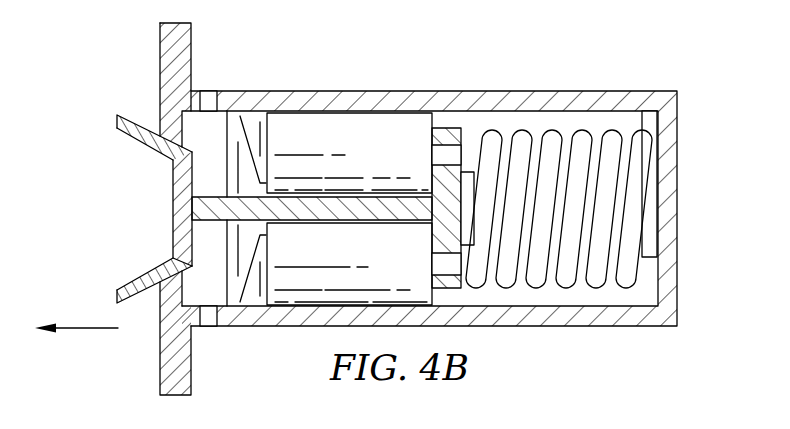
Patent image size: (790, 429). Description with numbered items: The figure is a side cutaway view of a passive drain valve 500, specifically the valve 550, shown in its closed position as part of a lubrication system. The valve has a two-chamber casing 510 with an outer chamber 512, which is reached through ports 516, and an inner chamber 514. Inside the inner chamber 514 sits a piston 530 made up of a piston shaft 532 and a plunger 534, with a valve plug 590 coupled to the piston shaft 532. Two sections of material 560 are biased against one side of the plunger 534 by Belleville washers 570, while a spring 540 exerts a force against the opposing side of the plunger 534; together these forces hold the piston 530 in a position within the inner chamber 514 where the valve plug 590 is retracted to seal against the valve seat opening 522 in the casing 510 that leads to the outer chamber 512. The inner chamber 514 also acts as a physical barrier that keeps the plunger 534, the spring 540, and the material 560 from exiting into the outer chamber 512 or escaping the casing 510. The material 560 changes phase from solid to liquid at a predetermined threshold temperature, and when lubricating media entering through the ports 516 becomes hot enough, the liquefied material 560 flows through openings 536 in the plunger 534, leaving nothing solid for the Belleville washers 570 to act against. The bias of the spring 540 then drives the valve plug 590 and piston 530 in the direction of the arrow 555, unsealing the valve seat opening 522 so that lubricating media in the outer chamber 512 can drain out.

The passive drain valve 500 is at (604, 60).
The valve 550 is at (347, 209).
The two-chamber casing 510 is at (391, 202).
The outer chamber 512 is at (172, 159).
The inner chamber 514 is at (489, 297).
The ports 516 is at (207, 100).
The valve seat opening 522 is at (161, 128).
The piston 530 is at (346, 230).
The piston shaft 532 is at (218, 208).
The plunger 534 is at (473, 250).
The openings 536 is at (450, 150).
The spring 540 is at (551, 290).
The arrow 555 is at (84, 328).
The sections of material 560 is at (347, 130).
The Belleville washers 570 is at (247, 112).
The valve plug 590 is at (173, 182).